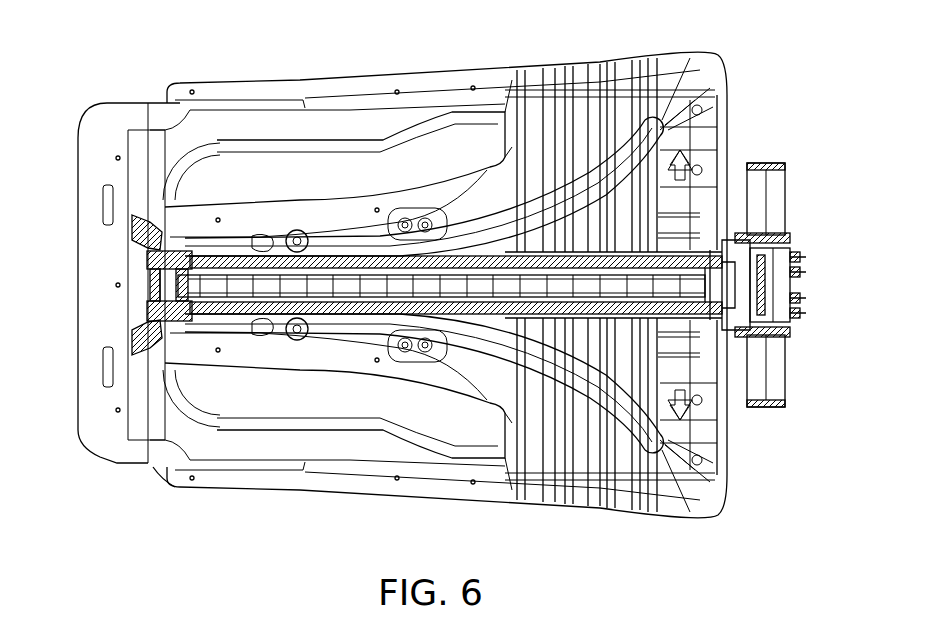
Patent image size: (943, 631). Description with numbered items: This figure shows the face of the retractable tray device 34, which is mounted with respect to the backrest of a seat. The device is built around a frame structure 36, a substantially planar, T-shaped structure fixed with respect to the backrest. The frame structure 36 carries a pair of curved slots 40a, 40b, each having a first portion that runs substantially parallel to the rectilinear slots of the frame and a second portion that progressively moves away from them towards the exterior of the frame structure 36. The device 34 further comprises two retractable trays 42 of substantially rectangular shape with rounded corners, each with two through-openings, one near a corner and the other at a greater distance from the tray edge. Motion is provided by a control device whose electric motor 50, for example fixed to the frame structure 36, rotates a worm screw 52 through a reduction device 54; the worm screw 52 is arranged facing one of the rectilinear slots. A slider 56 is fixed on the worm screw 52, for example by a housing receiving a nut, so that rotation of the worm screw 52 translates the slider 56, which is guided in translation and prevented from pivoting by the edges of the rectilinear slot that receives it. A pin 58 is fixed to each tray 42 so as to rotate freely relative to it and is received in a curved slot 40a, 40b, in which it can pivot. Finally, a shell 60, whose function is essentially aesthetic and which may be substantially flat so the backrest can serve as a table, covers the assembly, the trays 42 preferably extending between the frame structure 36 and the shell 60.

The retractable tray device 34 is at (60, 92).
The frame structure 36 is at (555, 80).
The curved slot 40a is at (380, 245).
The curved slot 40b is at (402, 323).
The retractable tray 42 is at (327, 163).
The electric motor 50 is at (777, 200).
The worm screw 52 is at (222, 250).
The reduction device 54 is at (773, 253).
The slider 56 is at (165, 247).
The pin 58 is at (295, 238).
The shell 60 is at (215, 105).